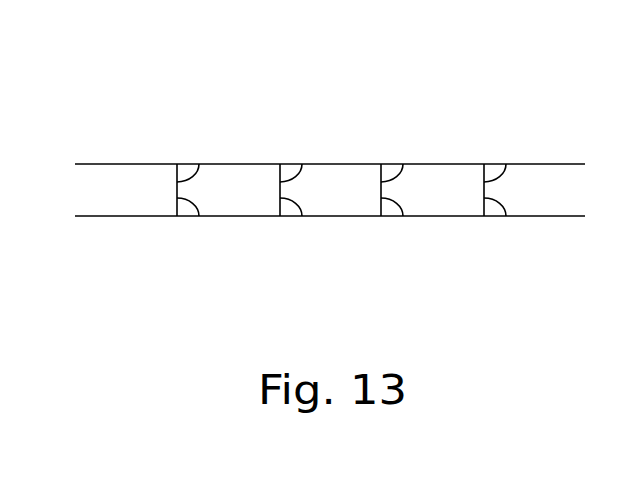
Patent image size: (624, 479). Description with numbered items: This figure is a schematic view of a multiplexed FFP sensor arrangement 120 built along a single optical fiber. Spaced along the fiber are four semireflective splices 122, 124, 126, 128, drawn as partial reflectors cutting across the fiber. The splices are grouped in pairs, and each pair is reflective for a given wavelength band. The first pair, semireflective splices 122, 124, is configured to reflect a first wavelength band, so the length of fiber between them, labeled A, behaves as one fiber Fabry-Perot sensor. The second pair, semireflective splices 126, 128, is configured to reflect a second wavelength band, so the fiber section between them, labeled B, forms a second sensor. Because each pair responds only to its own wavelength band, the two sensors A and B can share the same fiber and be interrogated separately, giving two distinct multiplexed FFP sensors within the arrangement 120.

The multiplexed FFP sensor arrangement 120 is at (146, 262).
The semireflective splice 122 is at (199, 164).
The semireflective splice 124 is at (302, 164).
The semireflective splice 126 is at (403, 164).
The semireflective splice 128 is at (506, 164).
The first cavity section A is at (242, 150).
The second cavity section B is at (445, 150).